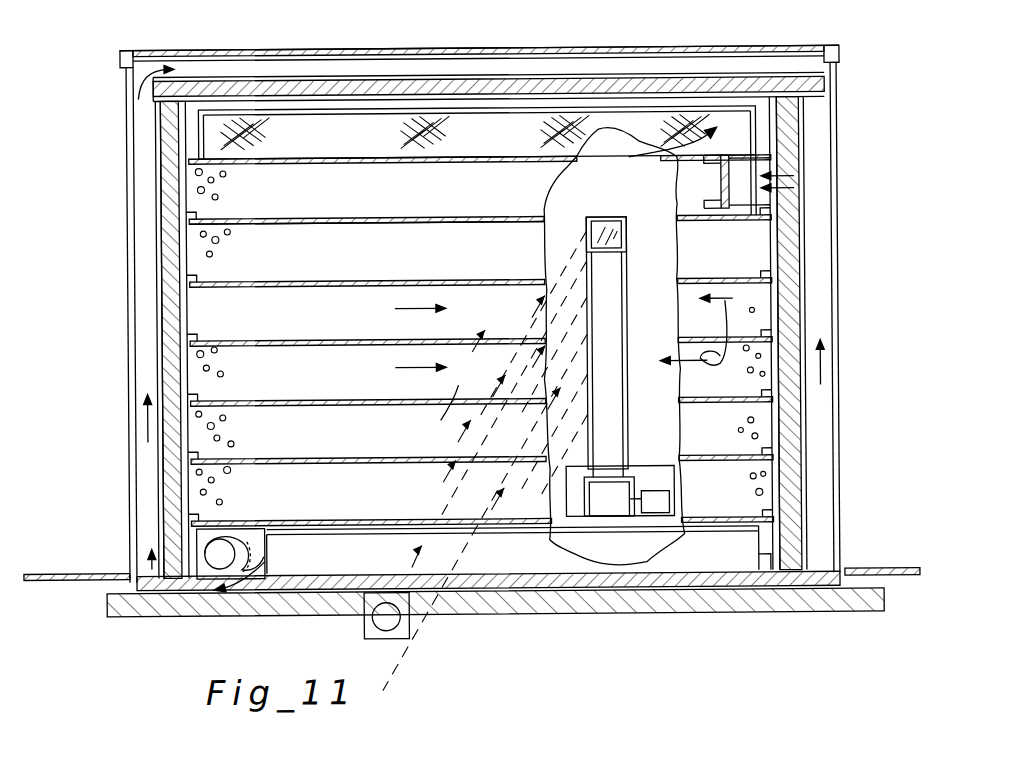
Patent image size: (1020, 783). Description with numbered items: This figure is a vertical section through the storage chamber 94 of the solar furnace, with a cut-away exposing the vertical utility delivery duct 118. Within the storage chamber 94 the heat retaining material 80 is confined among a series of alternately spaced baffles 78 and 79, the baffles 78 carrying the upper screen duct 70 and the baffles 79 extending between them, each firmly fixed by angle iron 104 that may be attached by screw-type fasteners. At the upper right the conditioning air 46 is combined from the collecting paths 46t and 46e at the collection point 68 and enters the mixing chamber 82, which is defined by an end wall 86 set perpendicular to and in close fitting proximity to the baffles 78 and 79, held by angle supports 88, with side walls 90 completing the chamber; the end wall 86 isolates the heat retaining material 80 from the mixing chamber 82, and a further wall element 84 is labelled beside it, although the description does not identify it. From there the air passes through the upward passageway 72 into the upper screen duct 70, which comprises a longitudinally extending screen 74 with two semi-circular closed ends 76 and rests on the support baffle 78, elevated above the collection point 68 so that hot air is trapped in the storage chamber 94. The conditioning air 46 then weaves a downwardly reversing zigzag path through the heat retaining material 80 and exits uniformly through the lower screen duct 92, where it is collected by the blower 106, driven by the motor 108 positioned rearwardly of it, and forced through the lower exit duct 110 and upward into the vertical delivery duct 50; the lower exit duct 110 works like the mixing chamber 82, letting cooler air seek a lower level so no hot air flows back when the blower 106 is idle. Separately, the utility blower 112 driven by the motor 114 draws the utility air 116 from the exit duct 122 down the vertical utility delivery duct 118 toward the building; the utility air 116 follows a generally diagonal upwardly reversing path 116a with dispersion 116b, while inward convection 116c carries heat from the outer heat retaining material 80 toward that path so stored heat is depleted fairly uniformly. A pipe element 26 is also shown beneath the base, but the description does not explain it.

The gas supply pipe 26 is at (408, 626).
The conditioning air 46 is at (157, 578).
The top collecting path of conditioning air 46t is at (810, 157).
The eastern collecting path of conditioning air 46e is at (805, 240).
The vertical delivery duct 50 is at (135, 306).
The collection point 68 is at (790, 183).
The upper screen duct 70 is at (392, 125).
The upward passageway 72 is at (755, 153).
The longitudinally extending screen 74 is at (290, 112).
The semi-circular closed ends 76 is at (762, 115).
The support baffle 78 is at (415, 258).
The baffle 79 is at (333, 222).
The heat retaining material 80 is at (641, 100).
The mixing chamber 82 is at (748, 208).
The damper wall 84 is at (783, 190).
The end wall 86 is at (737, 212).
The angle supports 88 is at (717, 200).
The side walls 90 is at (752, 204).
The lower screen duct 92 is at (518, 563).
The storage chamber 94 is at (250, 190).
The angle iron 104 is at (200, 330).
The blower 106 is at (266, 517).
The motor 108 is at (228, 545).
The lower exit duct 110 is at (195, 583).
The utility blower 112 is at (617, 500).
The motor 114 is at (665, 505).
The utility air 116 is at (402, 310).
The diagonal path direction 116a is at (457, 480).
The dispersion 116b is at (442, 412).
The inward convection 116c is at (697, 342).
The vertical utility delivery duct 118 is at (615, 343).
The exit duct 122 is at (585, 228).